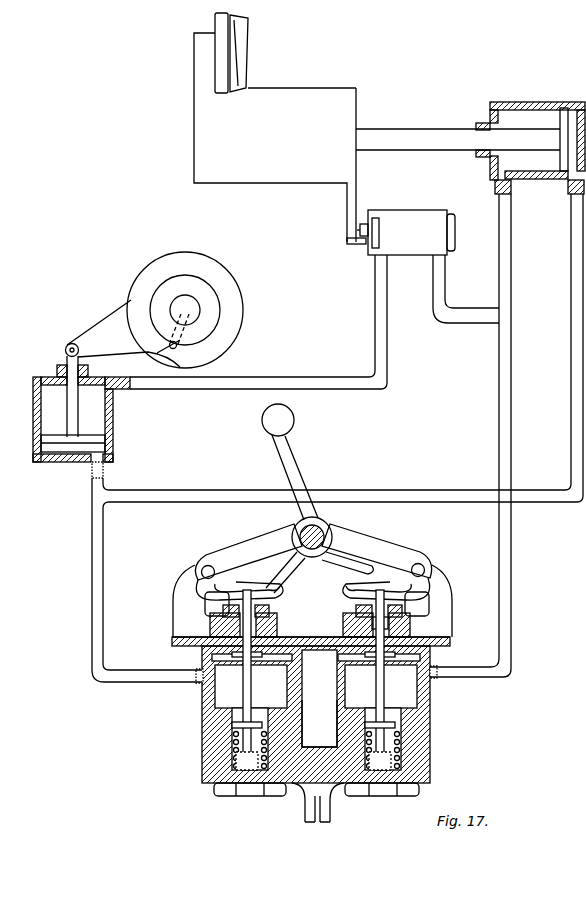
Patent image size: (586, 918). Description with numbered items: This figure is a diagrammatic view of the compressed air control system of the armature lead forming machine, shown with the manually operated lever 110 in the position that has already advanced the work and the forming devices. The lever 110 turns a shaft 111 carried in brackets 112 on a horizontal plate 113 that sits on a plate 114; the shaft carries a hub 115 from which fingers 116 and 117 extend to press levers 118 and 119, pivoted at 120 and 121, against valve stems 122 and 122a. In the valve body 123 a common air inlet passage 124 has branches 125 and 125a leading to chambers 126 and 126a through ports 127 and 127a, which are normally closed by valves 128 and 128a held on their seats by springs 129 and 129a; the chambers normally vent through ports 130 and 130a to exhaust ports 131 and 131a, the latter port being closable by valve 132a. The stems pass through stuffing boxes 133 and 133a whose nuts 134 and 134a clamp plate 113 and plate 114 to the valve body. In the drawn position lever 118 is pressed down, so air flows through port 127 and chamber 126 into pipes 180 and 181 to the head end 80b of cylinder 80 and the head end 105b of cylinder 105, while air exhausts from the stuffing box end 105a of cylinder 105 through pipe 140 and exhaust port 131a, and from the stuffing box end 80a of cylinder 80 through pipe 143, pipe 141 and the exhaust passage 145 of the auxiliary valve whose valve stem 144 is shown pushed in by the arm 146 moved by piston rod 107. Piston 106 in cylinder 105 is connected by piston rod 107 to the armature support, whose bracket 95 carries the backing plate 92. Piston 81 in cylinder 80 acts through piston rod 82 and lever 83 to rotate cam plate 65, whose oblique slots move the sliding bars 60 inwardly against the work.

The sliding bars 60 is at (179, 336).
The rotatable cam plate 65 is at (177, 262).
The cylinder 80 is at (33, 411).
The stuffing box end 80a is at (44, 370).
The head end 80b is at (72, 468).
The piston 81 is at (41, 442).
The piston rod 82 is at (62, 355).
The lever 83 is at (105, 322).
The backing plate 92 is at (232, 15).
The bracket 95 is at (194, 58).
The air cylinder 105 is at (524, 103).
The stuffing box end 105a is at (488, 120).
The head end 105b is at (572, 222).
The piston 106 is at (563, 112).
The piston rod 107 is at (428, 140).
The manually operated lever 110 is at (262, 420).
The shaft 111 is at (328, 535).
The brackets 112 is at (370, 547).
The horizontal plate 113 is at (176, 648).
The plate 114 is at (176, 648).
The hub 115 is at (299, 531).
The finger 116 is at (289, 566).
The finger 117 is at (350, 553).
The lever 118 is at (273, 591).
The lever 119 is at (349, 586).
The pivot 120 is at (203, 570).
The pivot 121 is at (422, 568).
The valve stem 122 is at (221, 610).
The valve stem 122a is at (432, 592).
The valve body 123 is at (226, 764).
The common air inlet passage 124 is at (311, 797).
The branch 125 is at (222, 770).
The branch 125a is at (410, 772).
The chamber 126 is at (218, 695).
The chamber 126a is at (410, 695).
The port 127 is at (262, 712).
The port 127a is at (370, 712).
The valve 128 is at (251, 686).
The valve 128a is at (388, 714).
The spring 129 is at (238, 735).
The spring 129a is at (400, 745).
The port 130 is at (319, 698).
The port 130a is at (321, 710).
The exhaust port 131 is at (214, 660).
The exhaust port 131a is at (428, 658).
The valve 132a is at (416, 628).
The stuffing box 133 is at (224, 618).
The stuffing box 133a is at (412, 615).
The nut 134 is at (212, 633).
The nut 134a is at (426, 637).
The pipe 140 is at (499, 411).
The branch pipe 141 is at (457, 318).
The pipe 143 is at (376, 298).
The valve stem 144 is at (363, 224).
The exhaust passage 145 is at (370, 250).
The arm 146 is at (348, 223).
The pipe 180 is at (92, 543).
The pipe 181 is at (211, 497).